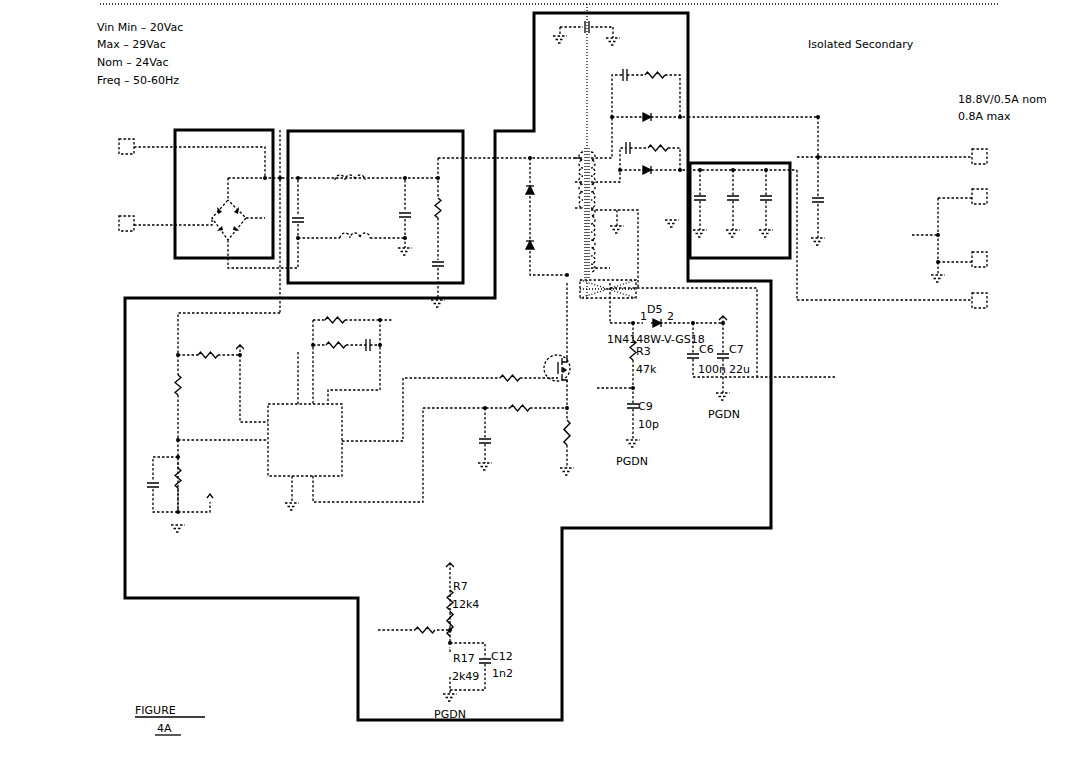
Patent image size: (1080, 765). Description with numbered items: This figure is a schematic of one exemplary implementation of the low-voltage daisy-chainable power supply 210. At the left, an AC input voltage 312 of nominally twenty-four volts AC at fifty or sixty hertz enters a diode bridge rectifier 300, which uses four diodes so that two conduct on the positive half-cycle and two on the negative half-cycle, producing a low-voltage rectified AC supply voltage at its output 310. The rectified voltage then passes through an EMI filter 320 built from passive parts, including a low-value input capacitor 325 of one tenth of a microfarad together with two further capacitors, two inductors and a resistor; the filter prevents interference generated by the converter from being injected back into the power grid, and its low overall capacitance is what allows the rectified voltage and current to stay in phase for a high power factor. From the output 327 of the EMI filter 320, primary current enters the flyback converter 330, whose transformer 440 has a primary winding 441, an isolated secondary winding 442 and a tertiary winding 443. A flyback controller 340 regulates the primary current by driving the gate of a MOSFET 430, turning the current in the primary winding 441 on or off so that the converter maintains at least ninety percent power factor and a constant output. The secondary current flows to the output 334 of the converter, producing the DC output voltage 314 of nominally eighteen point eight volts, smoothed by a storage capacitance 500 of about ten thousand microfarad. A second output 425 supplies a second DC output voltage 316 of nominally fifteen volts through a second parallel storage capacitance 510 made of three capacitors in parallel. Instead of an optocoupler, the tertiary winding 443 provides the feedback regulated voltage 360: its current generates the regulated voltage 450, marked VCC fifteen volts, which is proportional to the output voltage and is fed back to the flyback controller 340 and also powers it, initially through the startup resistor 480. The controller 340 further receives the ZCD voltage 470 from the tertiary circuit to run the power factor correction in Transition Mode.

The low-voltage daisy-chainable power supply 210 is at (843, 606).
The diode bridge rectifier 300 is at (236, 181).
The output of the diode bridge rectifier 310 is at (334, 186).
The AC input voltage 312 is at (172, 186).
The DC output voltage 314 is at (956, 197).
The second DC output voltage 316 is at (989, 283).
The EMI filter 320 is at (382, 209).
The input capacitor 325 is at (351, 204).
The output of the EMI filter 327 is at (509, 140).
The flyback converter 330 is at (475, 366).
The output of the flyback converter 334 is at (783, 105).
The flyback controller 340 is at (345, 461).
The feedback regulated voltage 360 is at (380, 479).
The second output of the flyback converter 425 is at (678, 147).
The MOSFET 430 is at (481, 414).
The transformer 440 is at (553, 217).
The primary winding 441 is at (559, 177).
The secondary winding 442 is at (605, 179).
The tertiary winding 443 is at (635, 202).
The regulated voltage 450 is at (514, 446).
The ZCD voltage 470 is at (440, 393).
The resistor 480 is at (219, 433).
The storage capacitance 500 is at (879, 208).
The second parallel storage capacitance 510 is at (748, 191).